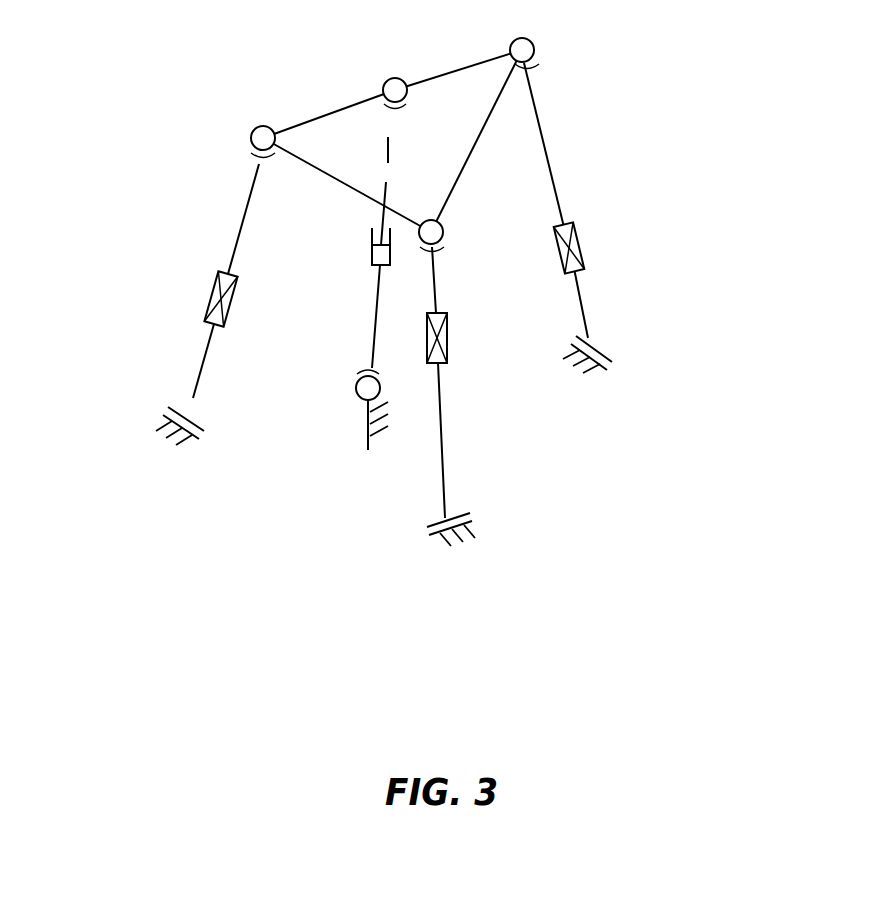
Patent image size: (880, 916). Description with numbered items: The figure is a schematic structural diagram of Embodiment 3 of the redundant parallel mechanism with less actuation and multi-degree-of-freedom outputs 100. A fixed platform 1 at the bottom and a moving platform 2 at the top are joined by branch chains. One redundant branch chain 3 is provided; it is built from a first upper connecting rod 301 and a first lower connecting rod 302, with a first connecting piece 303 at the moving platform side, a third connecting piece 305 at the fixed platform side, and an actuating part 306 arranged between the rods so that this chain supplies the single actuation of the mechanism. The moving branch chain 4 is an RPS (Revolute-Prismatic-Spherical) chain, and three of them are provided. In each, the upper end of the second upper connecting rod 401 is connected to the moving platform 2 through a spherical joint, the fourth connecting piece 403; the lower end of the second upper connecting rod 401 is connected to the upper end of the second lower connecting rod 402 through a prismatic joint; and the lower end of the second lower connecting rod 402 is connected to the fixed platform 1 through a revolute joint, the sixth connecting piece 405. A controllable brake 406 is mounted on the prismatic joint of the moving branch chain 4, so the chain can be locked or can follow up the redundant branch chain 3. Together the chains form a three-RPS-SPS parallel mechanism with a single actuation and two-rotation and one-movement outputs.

The redundant parallel mechanism with less actuation and multi-degree-of-freedom out 100 is at (372, 78).
The fixed platform 1 is at (472, 545).
The moving platform 2 is at (448, 118).
The redundant branch chain 3 is at (372, 292).
The moving branch chain 4 is at (547, 147).
The first upper connecting rod 301 is at (386, 160).
The first lower connecting rod 302 is at (372, 328).
The first connecting piece 303 is at (382, 95).
The third connecting piece 305 is at (356, 395).
The actuating part 306 is at (371, 245).
The second upper connecting rod 401 is at (556, 193).
The second lower connecting rod 402 is at (584, 308).
The fourth connecting piece 403 is at (536, 45).
The sixth connecting piece 405 is at (603, 348).
The brake 406 is at (580, 248).